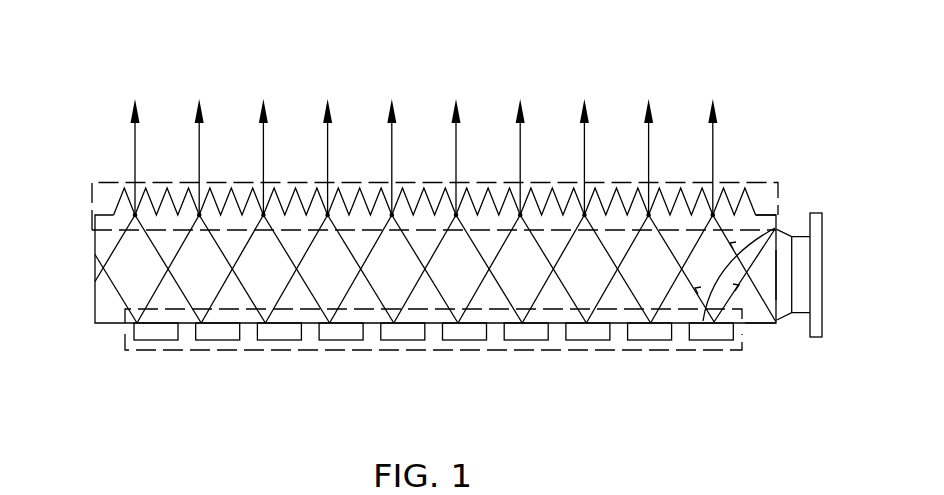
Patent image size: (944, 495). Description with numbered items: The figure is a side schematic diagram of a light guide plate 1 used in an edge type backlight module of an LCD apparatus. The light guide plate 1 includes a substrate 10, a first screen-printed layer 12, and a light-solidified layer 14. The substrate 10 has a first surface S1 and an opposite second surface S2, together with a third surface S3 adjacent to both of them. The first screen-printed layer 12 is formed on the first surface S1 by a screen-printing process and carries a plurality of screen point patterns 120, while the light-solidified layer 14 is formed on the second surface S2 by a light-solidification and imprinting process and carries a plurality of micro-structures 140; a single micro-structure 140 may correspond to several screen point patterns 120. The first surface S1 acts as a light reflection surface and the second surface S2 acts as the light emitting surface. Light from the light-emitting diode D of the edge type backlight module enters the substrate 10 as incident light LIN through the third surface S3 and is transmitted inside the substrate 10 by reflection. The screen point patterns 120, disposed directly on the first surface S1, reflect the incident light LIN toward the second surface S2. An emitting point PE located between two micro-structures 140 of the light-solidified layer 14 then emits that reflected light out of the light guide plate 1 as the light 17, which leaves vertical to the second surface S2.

The light guide plate 1 is at (768, 72).
The substrate 10 is at (95, 272).
The first screen-printed layer 12 is at (124, 338).
The screen point patterns 120 is at (155, 340).
The light-solidified layer 14 is at (92, 208).
The micro-structures 140 is at (118, 208).
The light 17 is at (421, 142).
The emitting point PE is at (648, 213).
The first surface S1 is at (760, 323).
The second surface S2 is at (765, 228).
The third surface S3 is at (777, 272).
The light-emitting diode D is at (802, 236).
The incident light LIN is at (703, 321).